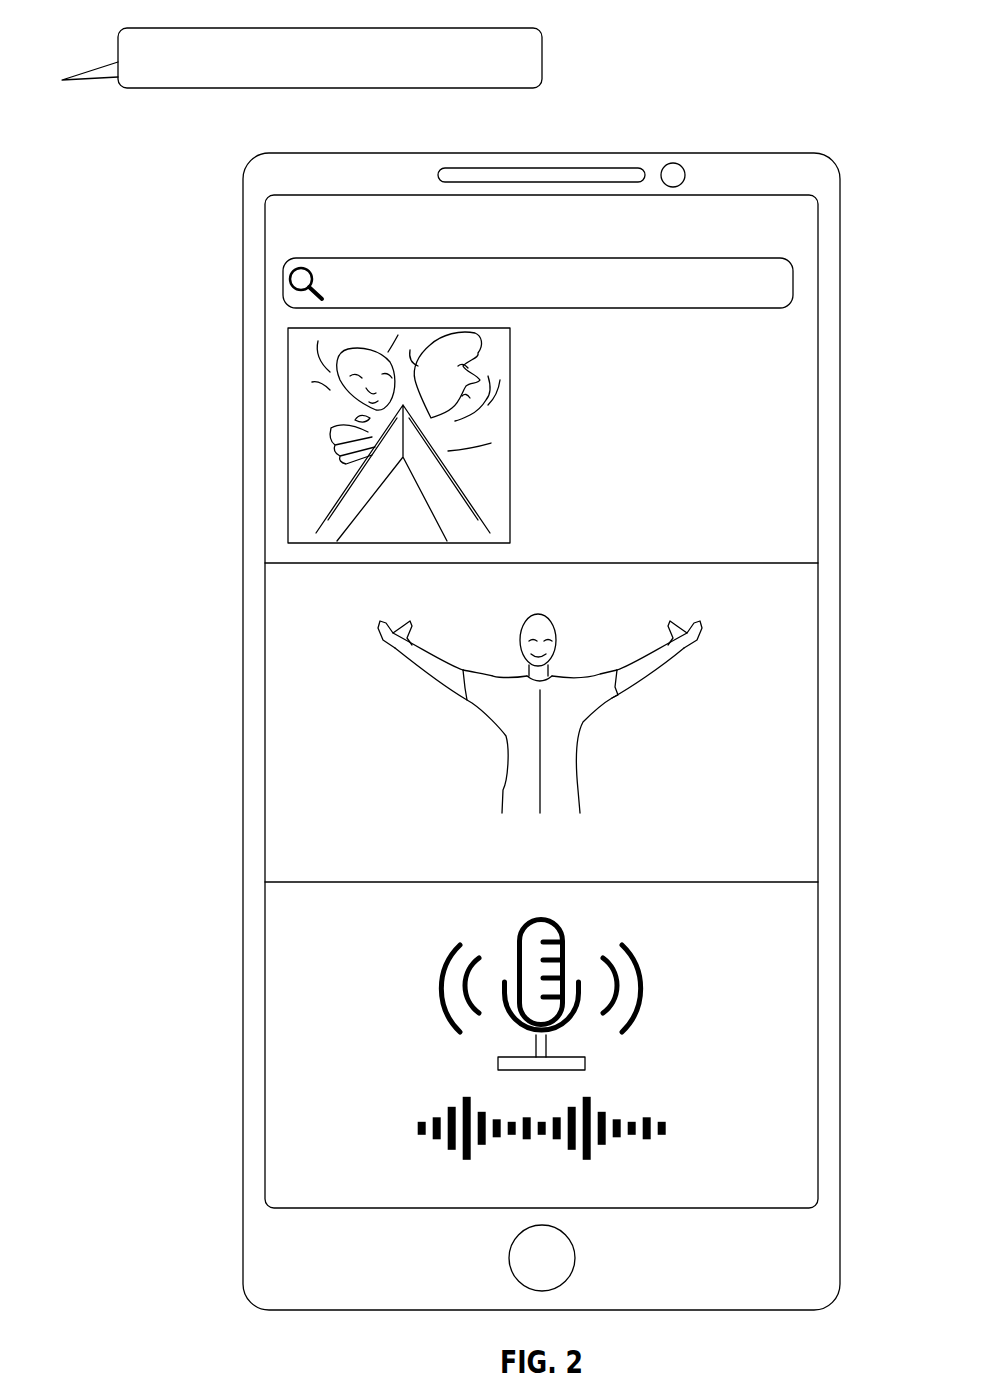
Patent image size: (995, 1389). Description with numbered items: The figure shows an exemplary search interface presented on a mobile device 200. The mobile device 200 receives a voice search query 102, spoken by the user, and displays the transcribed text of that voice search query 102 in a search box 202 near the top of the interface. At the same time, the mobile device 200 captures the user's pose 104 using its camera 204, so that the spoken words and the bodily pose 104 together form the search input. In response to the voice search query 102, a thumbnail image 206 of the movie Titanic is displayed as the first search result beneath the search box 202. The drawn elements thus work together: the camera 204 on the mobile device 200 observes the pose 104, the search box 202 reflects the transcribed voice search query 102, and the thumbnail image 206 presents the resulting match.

The voice search query 102 is at (183, 28).
The pose 104 is at (478, 742).
The mobile device 200 is at (306, 152).
The search box 202 is at (350, 257).
The camera 204 is at (688, 165).
The thumbnail image 206 is at (288, 437).